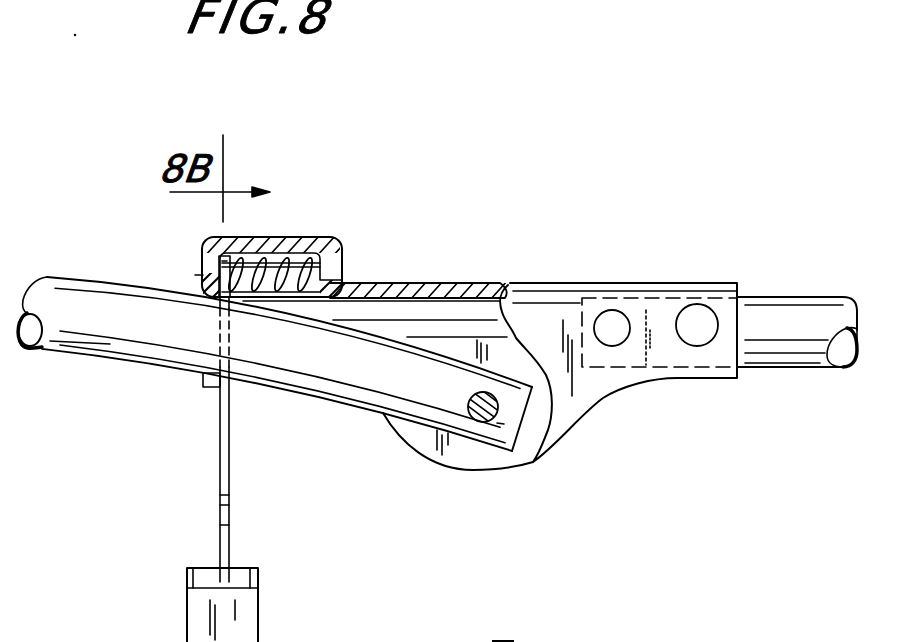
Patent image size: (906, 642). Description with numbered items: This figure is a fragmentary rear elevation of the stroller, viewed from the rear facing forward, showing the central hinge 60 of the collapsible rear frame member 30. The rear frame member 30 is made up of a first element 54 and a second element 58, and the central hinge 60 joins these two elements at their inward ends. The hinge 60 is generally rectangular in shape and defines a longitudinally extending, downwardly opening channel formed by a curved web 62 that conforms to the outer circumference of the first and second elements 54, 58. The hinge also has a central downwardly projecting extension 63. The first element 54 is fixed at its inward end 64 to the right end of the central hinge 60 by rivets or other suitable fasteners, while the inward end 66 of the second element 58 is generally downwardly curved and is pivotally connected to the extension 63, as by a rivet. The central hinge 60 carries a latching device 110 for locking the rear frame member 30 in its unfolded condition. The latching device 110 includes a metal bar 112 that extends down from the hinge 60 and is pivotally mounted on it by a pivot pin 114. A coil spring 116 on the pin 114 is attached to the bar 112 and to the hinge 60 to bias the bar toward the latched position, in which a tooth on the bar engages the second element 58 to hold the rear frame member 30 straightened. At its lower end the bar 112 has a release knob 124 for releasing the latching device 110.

The rear frame member 30 is at (541, 238).
The first element 54 is at (805, 367).
The second element 58 is at (107, 352).
The central hinge 60 is at (543, 282).
The curved web 62 is at (395, 304).
The extension 63 is at (592, 408).
The inward end 64 is at (673, 368).
The inward end 66 is at (412, 430).
The latching device 110 is at (230, 440).
The metal bar 112 is at (219, 468).
The pivot pin 114 is at (200, 274).
The coil spring 116 is at (289, 255).
The release knob 124 is at (260, 640).